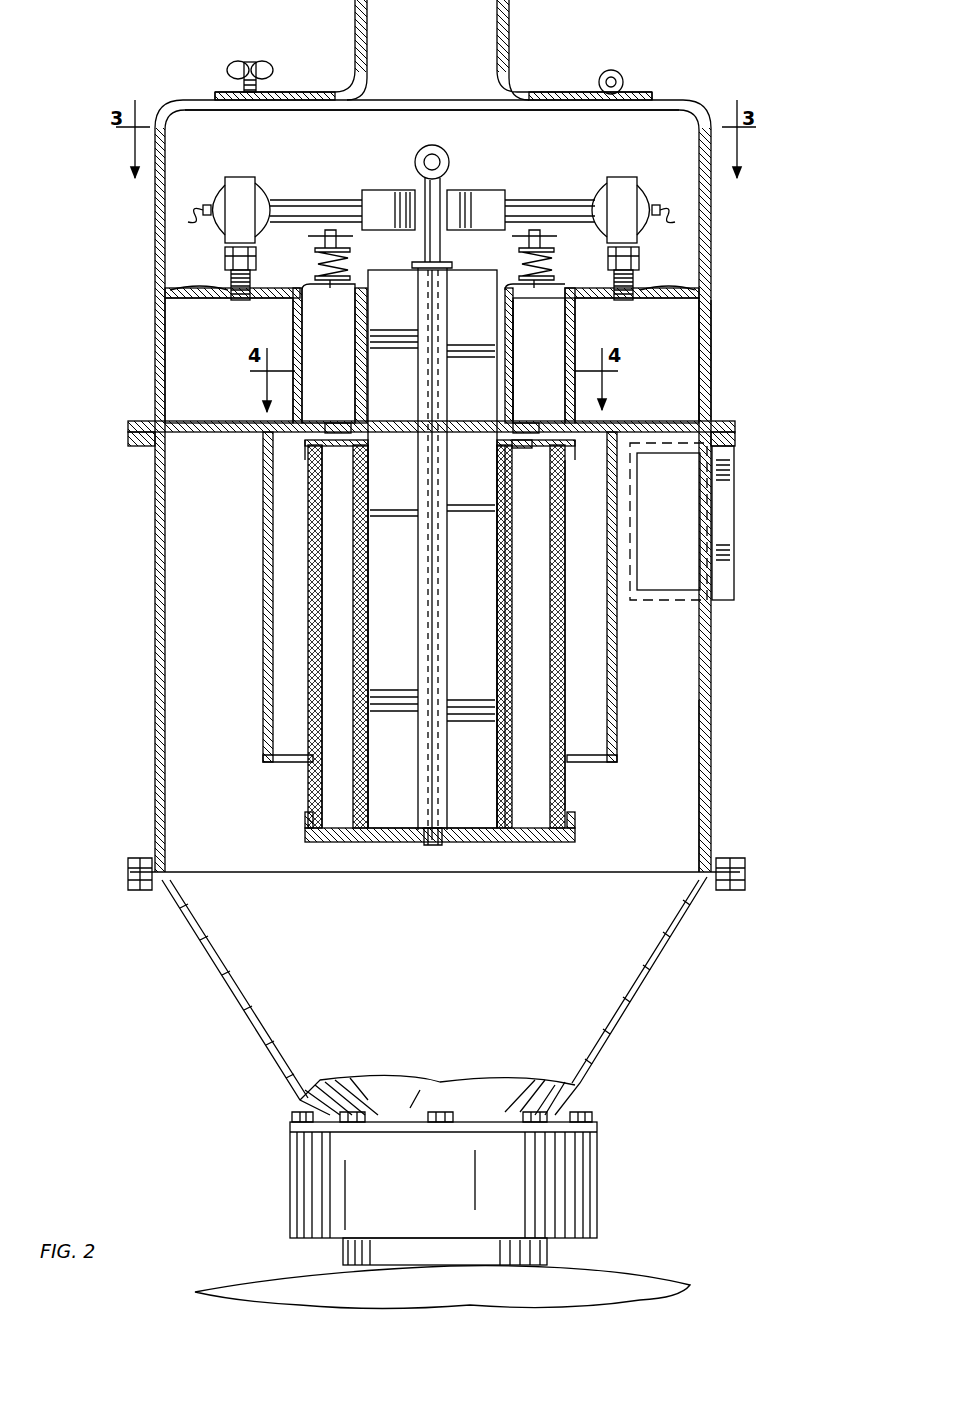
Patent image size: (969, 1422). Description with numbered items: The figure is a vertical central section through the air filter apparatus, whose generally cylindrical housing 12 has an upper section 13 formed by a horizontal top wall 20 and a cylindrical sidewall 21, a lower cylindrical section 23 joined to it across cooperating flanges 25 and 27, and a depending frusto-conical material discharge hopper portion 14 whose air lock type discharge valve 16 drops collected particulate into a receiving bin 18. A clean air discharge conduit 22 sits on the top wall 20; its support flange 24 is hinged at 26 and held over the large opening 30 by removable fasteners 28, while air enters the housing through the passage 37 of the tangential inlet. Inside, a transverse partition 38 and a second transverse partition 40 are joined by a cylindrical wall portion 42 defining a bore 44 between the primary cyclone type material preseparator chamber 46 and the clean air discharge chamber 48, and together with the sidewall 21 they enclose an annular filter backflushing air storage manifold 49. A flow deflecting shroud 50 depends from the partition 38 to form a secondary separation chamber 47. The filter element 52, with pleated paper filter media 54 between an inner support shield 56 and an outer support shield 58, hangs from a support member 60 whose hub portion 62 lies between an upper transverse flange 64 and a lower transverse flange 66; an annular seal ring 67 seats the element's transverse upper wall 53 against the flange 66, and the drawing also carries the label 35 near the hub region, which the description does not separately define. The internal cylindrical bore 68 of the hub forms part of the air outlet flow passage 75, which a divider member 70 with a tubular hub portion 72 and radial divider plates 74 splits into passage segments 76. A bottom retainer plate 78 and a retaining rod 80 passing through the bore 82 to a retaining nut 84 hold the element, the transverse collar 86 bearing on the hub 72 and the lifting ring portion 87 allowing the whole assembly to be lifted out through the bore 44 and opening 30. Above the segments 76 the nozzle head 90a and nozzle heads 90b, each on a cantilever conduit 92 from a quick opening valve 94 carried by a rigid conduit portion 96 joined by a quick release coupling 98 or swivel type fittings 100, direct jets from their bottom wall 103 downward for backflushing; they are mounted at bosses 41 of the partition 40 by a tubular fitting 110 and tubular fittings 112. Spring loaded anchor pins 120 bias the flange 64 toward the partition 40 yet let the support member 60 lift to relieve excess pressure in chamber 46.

The housing 12 is at (712, 395).
The upper section 13 is at (712, 240).
The material discharge hopper portion 14 is at (645, 998).
The air lock type discharge valve 16 is at (600, 1210).
The receiving bin 18 is at (640, 1270).
The top wall 20 is at (222, 95).
The cylindrical sidewall 21 is at (712, 335).
The clean air discharge conduit 22 is at (515, 45).
The lower cylindrical section 23 is at (712, 815).
The support flange 24 is at (528, 92).
The flange 25 is at (738, 424).
The hinge 26 is at (618, 80).
The flange 27 is at (740, 440).
The removable fasteners 28 is at (258, 62).
The opening 30 is at (600, 112).
The compartment cap 35 is at (560, 298).
The passage 37 is at (680, 590).
The transverse partition 38 is at (215, 433).
The second transverse partition 40 is at (210, 312).
The bosses 41 is at (228, 292).
The cylindrical wall portion 42 is at (293, 322).
The bore 44 is at (305, 350).
The primary cyclone type material preseparator chamber 46 is at (211, 754).
The secondary separation chamber 47 is at (301, 563).
The clean air discharge chamber 48 is at (357, 133).
The filter backflushing air storage manifold 49 is at (664, 391).
The flow deflecting shroud 50 is at (617, 648).
The filter element 52 is at (567, 722).
The transverse upper wall 53 is at (345, 448).
The pleated paper filter media 54 is at (497, 505).
The inner support shield 56 is at (505, 562).
The outer support shield 58 is at (566, 795).
The support member 60 is at (506, 374).
The hub portion 62 is at (510, 330).
The transverse flange 64 is at (568, 288).
The transverse flange 66 is at (520, 423).
The annular seal ring 67 is at (520, 448).
The internal cylindrical bore 68 is at (367, 392).
The divider member 70 is at (400, 262).
The tubular hub portion 72 is at (418, 312).
The divider plates 74 is at (430, 637).
The air outlet flow passage 75 is at (505, 548).
The passage segments 76 is at (404, 487).
The bottom retainer plate 78 is at (545, 842).
The retaining rod 80 is at (418, 590).
The bore 82 is at (447, 580).
The retaining nut 84 is at (442, 845).
The transverse collar 86 is at (441, 262).
The lifting ring portion 87 is at (449, 152).
The nozzle head 90a is at (392, 190).
The nozzle heads 90b is at (455, 190).
The cantilever conduit 92 is at (290, 200).
The quick opening valve 94 is at (233, 177).
The rigid conduit portion 96 is at (228, 240).
The quick release coupling 98 is at (225, 258).
The swivel type fittings 100 is at (639, 256).
The bottom wall 103 is at (352, 232).
The tubular fitting 110 is at (231, 278).
The tubular fittings 112 is at (633, 278).
The anchor pins 120 is at (332, 232).